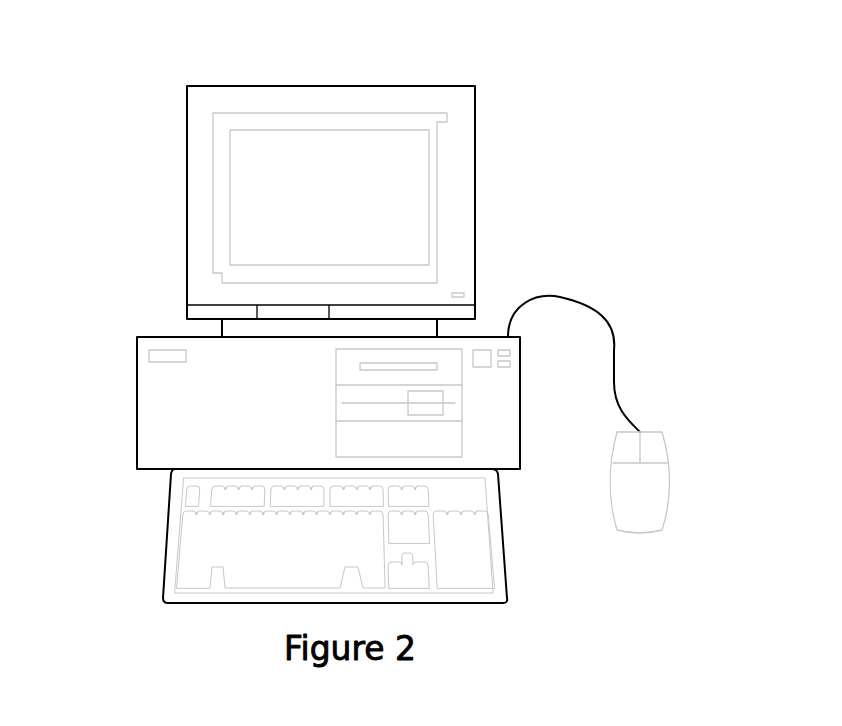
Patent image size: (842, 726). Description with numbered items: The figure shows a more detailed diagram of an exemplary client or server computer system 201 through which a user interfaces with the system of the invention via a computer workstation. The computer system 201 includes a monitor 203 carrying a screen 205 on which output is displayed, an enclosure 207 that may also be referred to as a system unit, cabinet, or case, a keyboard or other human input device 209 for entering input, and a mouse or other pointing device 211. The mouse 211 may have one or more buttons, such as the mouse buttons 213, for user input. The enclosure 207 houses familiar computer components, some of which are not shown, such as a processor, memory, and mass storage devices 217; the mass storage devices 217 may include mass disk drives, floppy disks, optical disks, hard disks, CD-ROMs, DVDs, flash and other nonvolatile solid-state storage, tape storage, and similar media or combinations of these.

The computer system 201 is at (519, 57).
The monitor 203 is at (474, 178).
The screen 205 is at (247, 187).
The enclosure 207 is at (165, 341).
The keyboard or other human input device 209 is at (210, 603).
The mouse or other pointing device 211 is at (640, 518).
The mouse buttons 213 is at (630, 452).
The mass storage devices 217 is at (453, 353).